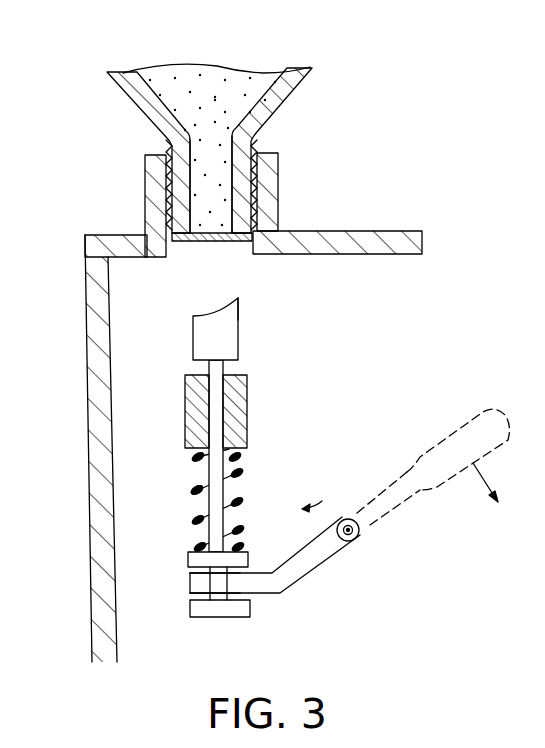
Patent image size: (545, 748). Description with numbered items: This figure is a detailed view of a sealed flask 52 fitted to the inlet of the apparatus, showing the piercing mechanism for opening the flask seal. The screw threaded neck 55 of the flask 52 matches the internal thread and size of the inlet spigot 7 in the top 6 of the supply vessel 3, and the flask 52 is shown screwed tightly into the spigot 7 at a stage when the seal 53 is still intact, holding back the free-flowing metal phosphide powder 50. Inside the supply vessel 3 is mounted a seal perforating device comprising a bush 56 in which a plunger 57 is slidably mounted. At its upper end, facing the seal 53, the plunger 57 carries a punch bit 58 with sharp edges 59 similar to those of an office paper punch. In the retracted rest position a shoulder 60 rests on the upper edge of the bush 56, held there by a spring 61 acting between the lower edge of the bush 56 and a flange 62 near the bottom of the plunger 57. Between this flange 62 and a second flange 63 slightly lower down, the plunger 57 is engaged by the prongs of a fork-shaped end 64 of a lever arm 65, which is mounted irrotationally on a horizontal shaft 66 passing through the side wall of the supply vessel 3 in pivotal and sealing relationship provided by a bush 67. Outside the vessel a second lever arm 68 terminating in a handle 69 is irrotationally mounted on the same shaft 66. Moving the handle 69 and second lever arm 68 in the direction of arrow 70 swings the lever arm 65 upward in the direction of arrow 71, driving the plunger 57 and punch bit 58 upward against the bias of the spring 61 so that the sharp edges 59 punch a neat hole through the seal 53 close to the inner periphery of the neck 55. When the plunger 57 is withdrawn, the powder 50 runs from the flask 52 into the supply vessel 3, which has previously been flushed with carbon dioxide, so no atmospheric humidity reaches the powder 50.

The supply vessel 3 is at (90, 440).
The top 6 is at (373, 240).
The inlet spigot 7 is at (270, 210).
The free-flowing powder 50 is at (240, 85).
The flask 52 is at (125, 88).
The seal 53 is at (200, 242).
The screw threaded neck 55 is at (163, 197).
The bush 56 is at (242, 418).
The plunger 57 is at (218, 480).
The punch bit 58 is at (208, 333).
The sharp edges 59 is at (238, 298).
The shoulder 60 is at (231, 360).
The spring 61 is at (194, 490).
The flange 62 is at (195, 562).
The second flange 63 is at (198, 612).
The fork-shaped end 64 is at (196, 586).
The lever arm 65 is at (302, 563).
The horizontal shaft 66 is at (348, 518).
The bush 67 is at (360, 532).
The second lever arm 68 is at (400, 487).
The handle 69 is at (445, 450).
The arrow 70 is at (499, 482).
The arrow 71 is at (326, 520).